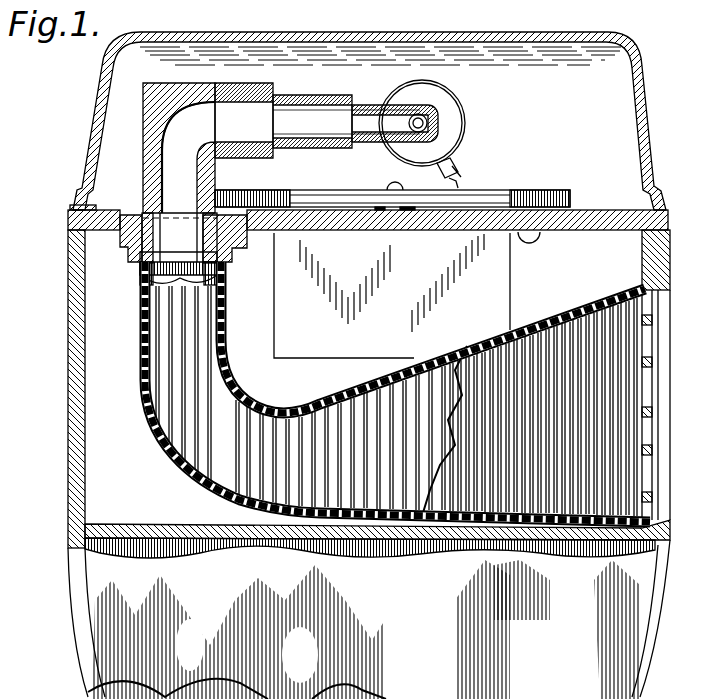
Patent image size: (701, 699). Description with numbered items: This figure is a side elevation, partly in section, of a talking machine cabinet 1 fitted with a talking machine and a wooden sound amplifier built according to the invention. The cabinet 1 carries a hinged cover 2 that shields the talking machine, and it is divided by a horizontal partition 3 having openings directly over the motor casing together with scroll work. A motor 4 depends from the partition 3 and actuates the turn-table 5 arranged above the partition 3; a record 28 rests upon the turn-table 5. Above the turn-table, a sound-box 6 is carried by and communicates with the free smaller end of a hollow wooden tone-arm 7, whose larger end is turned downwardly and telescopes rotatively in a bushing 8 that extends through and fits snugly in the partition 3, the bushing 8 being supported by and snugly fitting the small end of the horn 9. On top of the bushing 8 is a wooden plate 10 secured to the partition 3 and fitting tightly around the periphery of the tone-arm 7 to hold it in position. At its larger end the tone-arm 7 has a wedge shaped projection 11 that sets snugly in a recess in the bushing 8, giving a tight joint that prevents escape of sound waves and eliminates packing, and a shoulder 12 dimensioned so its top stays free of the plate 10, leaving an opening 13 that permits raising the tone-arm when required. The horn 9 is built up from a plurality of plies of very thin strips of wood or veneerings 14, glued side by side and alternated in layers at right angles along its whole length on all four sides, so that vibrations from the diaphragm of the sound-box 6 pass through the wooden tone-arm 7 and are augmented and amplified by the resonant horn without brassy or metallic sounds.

The cabinet 1 is at (648, 612).
The hinged cover 2 is at (647, 97).
The horizontal partition 3 is at (610, 221).
The motor 4 is at (392, 295).
The turn-table 5 is at (493, 190).
The sound-box 6 is at (447, 131).
The hollow wooden tone-arm 7 is at (326, 113).
The bushing 8 is at (117, 241).
The horn 9 is at (143, 311).
The wooden plate 10 is at (118, 210).
The wedge shaped projection 11 is at (235, 276).
The shoulder 12 is at (250, 235).
The opening 13 is at (83, 216).
The thin strips of wood or veneerings 14 is at (602, 295).
The record 28 is at (326, 190).